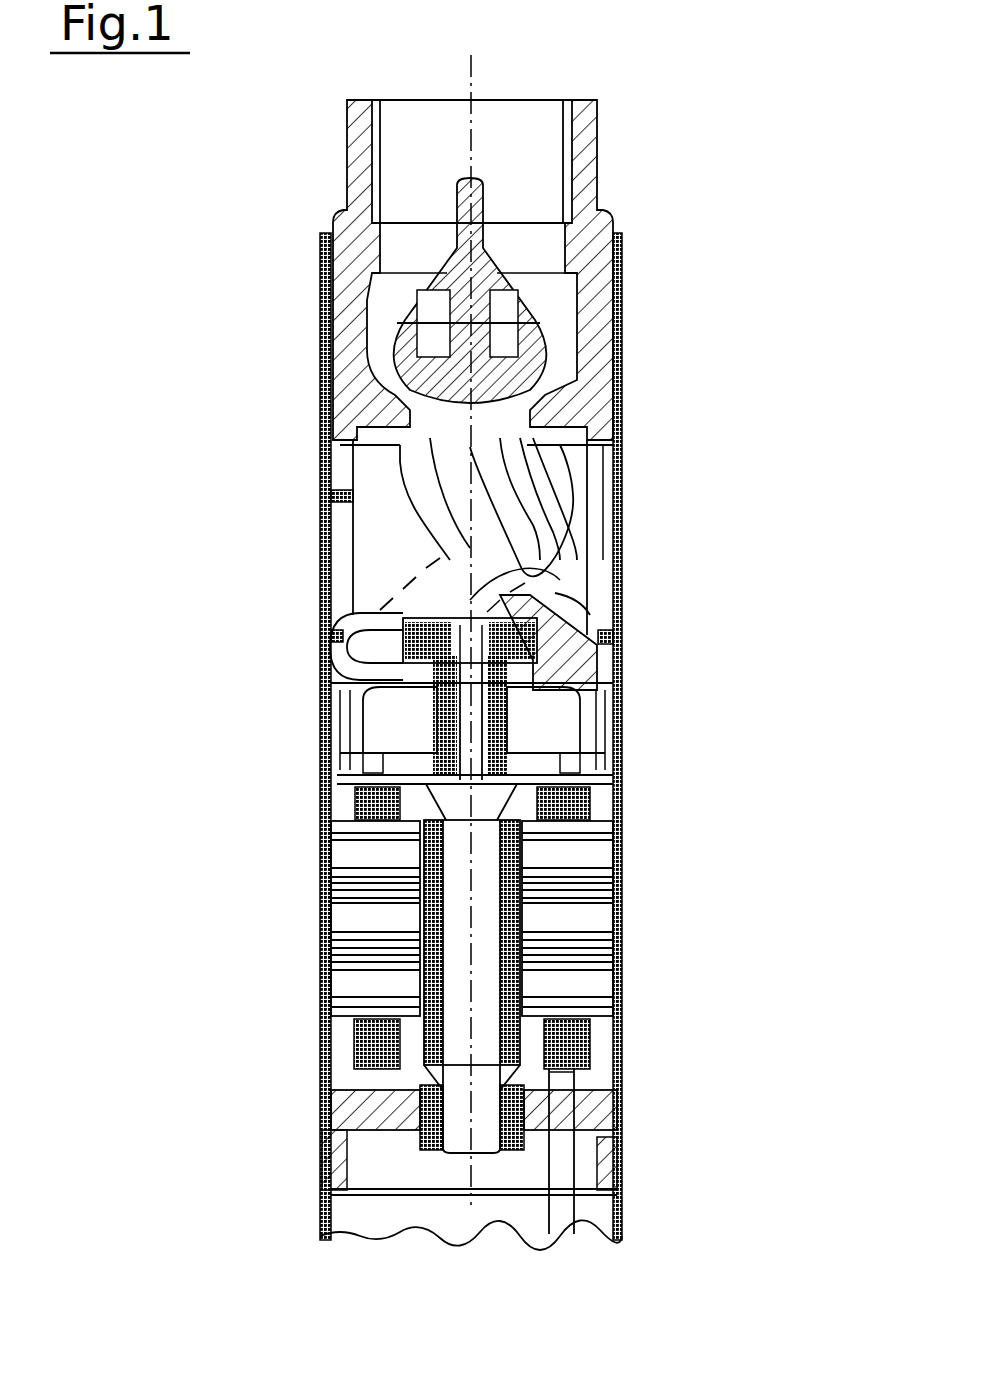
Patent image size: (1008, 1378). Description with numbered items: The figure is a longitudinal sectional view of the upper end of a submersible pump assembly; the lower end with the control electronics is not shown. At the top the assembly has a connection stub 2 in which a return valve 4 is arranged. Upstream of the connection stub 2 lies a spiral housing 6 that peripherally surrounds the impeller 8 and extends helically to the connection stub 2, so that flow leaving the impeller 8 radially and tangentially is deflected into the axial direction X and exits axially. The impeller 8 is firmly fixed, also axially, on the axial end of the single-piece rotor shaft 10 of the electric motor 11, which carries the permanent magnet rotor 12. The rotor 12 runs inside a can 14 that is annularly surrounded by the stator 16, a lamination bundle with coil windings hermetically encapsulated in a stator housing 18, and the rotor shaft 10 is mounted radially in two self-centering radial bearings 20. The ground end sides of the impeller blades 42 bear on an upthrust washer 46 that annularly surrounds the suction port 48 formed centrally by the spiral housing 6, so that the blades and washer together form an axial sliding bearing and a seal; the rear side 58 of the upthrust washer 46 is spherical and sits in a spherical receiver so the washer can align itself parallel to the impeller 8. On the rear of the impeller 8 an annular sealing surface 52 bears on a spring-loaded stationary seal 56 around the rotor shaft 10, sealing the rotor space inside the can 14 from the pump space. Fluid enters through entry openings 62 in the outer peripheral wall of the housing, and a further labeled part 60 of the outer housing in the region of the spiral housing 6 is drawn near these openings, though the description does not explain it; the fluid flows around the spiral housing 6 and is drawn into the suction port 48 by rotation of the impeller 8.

The connection stub 2 is at (597, 123).
The return valve 4 is at (533, 317).
The spiral housing 6 is at (560, 498).
The impeller 8 is at (540, 650).
The rotor shaft 10 is at (620, 796).
The electric motor 11 is at (310, 970).
The permanent magnet rotor 12 is at (483, 947).
The can 14 is at (467, 923).
The stator 16 is at (593, 985).
The stator housing 18 is at (620, 1063).
The radial bearings 20 is at (335, 783).
The impeller blades 42 is at (555, 630).
The upthrust washer 46 is at (335, 596).
The suction port 48 is at (457, 612).
The sealing surface 52 is at (335, 683).
The seal 56 is at (585, 720).
The side of the upthrust washer 58 is at (335, 595).
The outlet channel 60 is at (620, 460).
The entry openings 62 is at (321, 498).
The axial direction X is at (472, 1190).